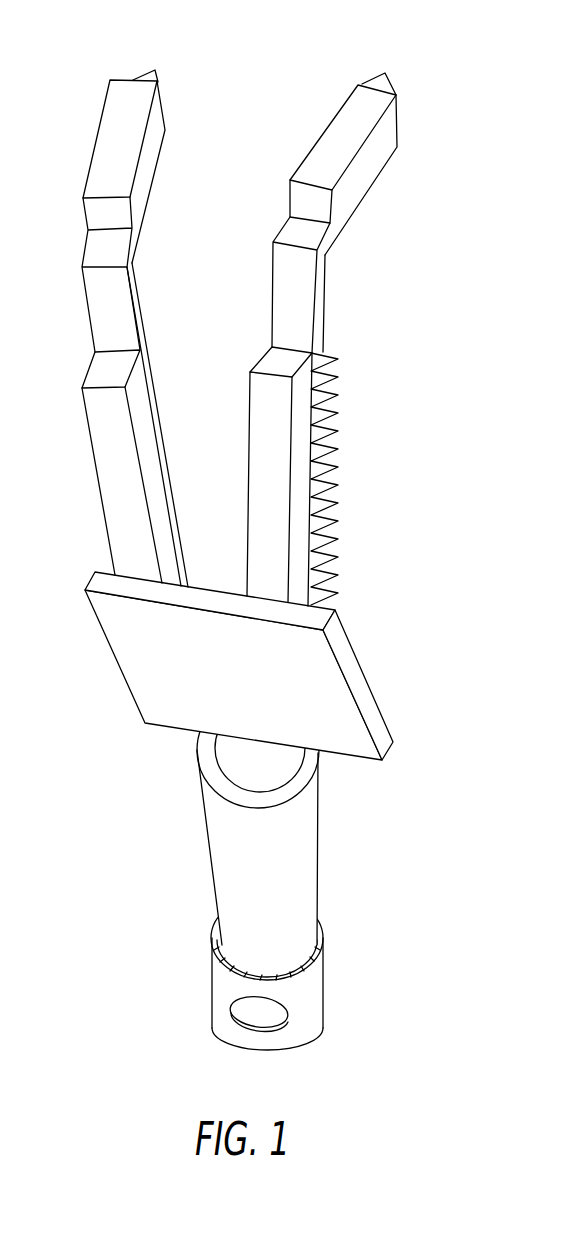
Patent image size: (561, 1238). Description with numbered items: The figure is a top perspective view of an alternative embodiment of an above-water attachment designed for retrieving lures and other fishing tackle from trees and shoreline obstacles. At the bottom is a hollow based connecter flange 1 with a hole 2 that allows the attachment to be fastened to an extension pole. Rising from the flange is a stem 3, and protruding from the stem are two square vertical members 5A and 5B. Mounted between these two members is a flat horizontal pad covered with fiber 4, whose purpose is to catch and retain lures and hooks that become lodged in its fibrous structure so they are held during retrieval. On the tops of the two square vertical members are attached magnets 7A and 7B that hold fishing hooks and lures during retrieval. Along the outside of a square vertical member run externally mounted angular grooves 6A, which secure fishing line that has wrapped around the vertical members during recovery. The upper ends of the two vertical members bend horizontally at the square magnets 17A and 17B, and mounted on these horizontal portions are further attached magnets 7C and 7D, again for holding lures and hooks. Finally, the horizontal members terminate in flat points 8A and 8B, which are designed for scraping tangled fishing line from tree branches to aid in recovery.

The hollow based connecter flange 1 is at (315, 1000).
The hole 2 is at (255, 1014).
The stem 3 is at (307, 877).
The flat horizontal pad covered with fiber 4 is at (372, 712).
The square vertical member 5A is at (326, 320).
The square vertical member 5B is at (98, 322).
The externally mounted angular grooves 6A is at (327, 578).
The attached magnet 7A is at (105, 468).
The attached magnet 7B is at (298, 508).
The attached magnet 7C is at (322, 145).
The attached magnet 7D is at (103, 153).
The flat point 8A is at (155, 70).
The flat point 8B is at (385, 73).
The square magnet 17A is at (134, 256).
The square magnet 17B is at (332, 238).